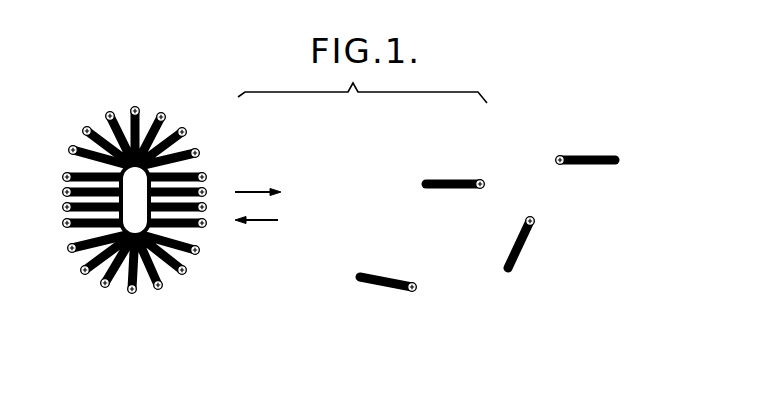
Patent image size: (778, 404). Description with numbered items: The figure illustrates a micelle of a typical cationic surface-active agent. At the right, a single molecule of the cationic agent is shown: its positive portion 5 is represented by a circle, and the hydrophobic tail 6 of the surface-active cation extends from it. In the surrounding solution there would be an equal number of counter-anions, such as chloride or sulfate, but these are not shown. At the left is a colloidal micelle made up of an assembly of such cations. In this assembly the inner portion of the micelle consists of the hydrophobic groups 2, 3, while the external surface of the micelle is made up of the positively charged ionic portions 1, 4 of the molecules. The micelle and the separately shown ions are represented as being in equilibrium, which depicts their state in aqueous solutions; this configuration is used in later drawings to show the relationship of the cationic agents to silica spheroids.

The positively charged ionic portion 1 is at (84, 274).
The hydrophobic group 2 is at (90, 252).
The hydrophobic group 3 is at (117, 277).
The positively charged ionic portion 4 is at (116, 283).
The positive portion 5 is at (480, 174).
The hydrophobic tail 6 is at (453, 174).